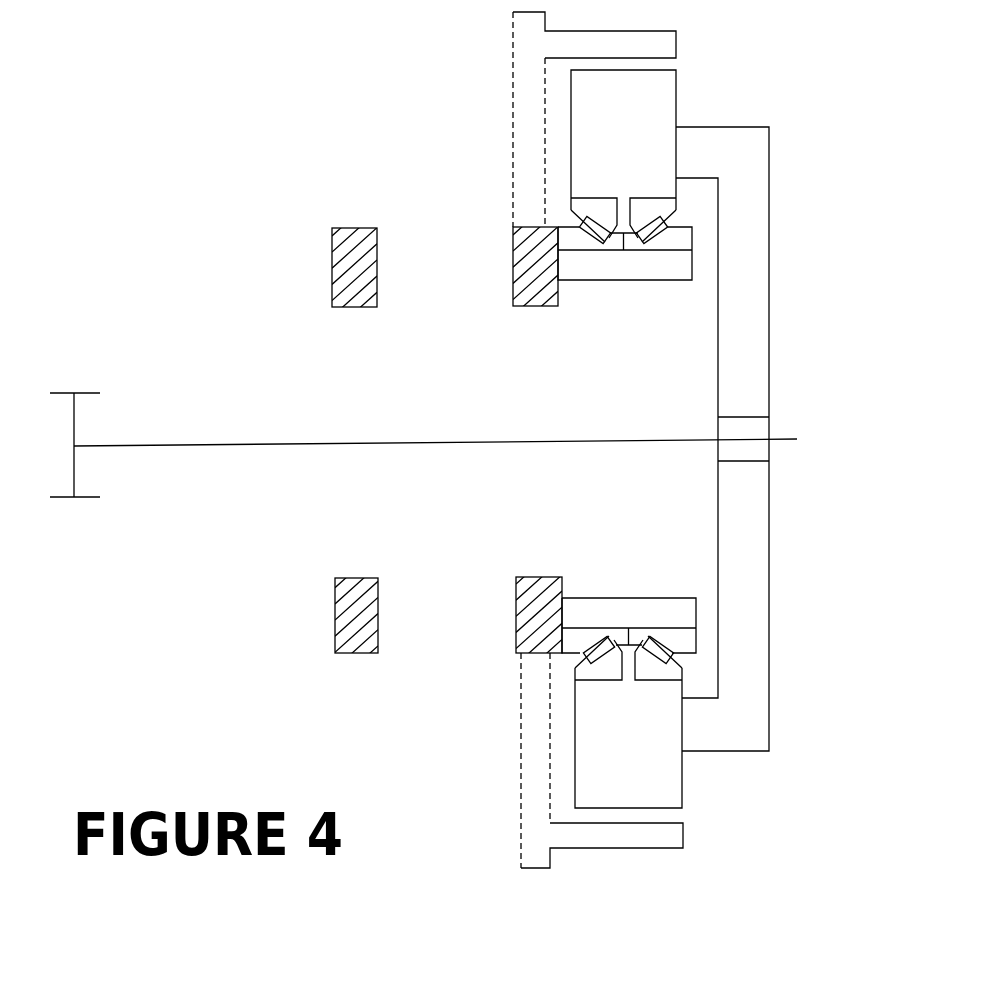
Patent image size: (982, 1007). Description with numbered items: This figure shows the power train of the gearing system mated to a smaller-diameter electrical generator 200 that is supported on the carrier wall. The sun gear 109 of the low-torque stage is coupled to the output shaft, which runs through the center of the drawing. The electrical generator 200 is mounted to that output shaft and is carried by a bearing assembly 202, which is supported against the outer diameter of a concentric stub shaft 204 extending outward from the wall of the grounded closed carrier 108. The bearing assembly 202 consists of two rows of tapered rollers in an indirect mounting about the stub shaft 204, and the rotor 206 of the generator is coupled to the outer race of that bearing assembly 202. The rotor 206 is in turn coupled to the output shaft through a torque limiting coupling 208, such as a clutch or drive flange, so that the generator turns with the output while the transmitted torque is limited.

The closed carrier 108 is at (362, 308).
The sun gear 109 is at (72, 467).
The electrical generator 200 is at (692, 766).
The bearing assembly 202 is at (692, 208).
The stub shaft 204 is at (622, 590).
The rotor 206 is at (652, 142).
The torque limiting coupling 208 is at (732, 356).